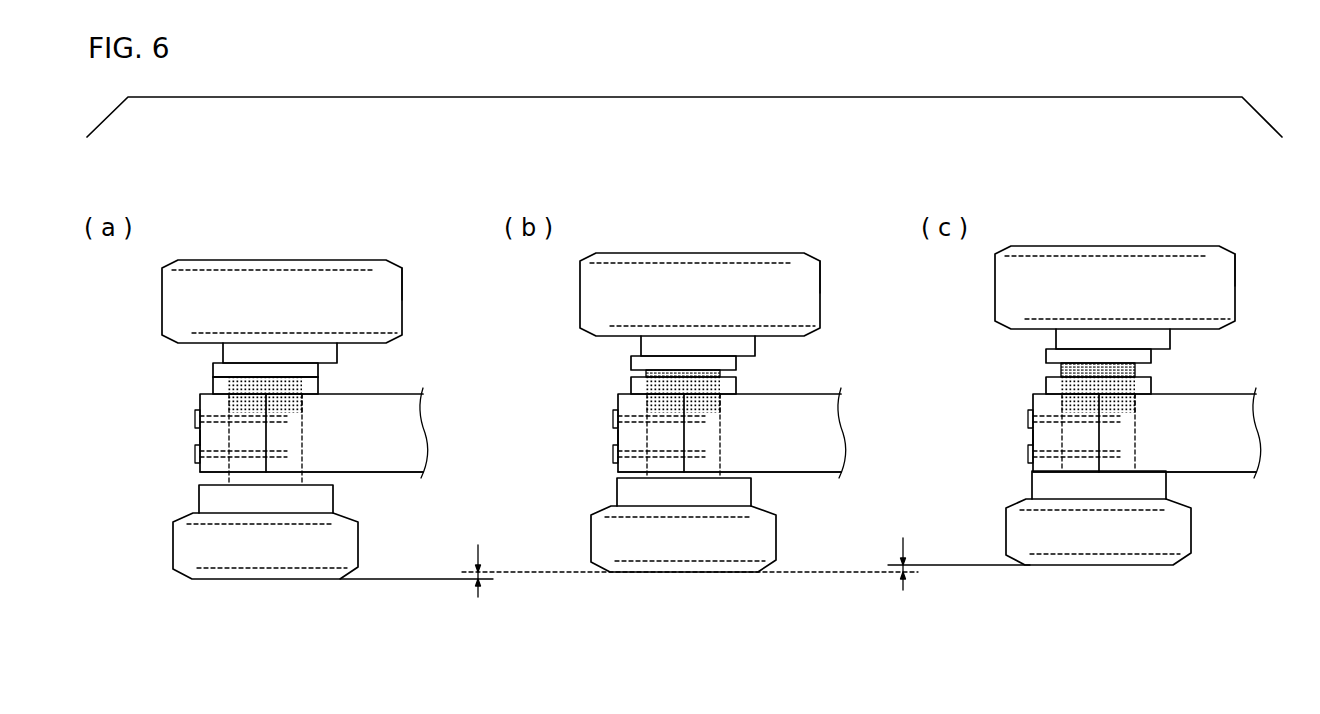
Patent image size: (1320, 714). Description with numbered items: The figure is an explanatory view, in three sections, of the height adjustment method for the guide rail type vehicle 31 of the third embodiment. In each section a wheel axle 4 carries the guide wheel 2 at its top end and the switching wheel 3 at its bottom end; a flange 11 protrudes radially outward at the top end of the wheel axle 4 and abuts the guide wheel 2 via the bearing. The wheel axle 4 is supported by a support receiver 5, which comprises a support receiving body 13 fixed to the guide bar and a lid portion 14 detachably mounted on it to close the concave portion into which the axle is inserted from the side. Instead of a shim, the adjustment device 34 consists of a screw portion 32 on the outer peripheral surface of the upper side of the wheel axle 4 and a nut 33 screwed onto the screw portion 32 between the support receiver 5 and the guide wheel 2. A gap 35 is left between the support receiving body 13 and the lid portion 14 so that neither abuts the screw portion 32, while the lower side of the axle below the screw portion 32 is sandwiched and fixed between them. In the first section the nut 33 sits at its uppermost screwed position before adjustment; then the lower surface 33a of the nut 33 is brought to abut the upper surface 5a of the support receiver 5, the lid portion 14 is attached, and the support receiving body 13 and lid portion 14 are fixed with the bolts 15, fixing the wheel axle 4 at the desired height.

The guide wheel 2 is at (218, 260).
The switching wheel 3 is at (233, 580).
The wheel axle 4 is at (303, 440).
The support receiver 5 is at (368, 389).
The upper surface of the support receiver 5a is at (317, 394).
The flange 11 is at (212, 368).
The support receiving body 13 is at (358, 473).
The lid portion 14 is at (200, 440).
The bolts 15 is at (196, 417).
The guide rail type vehicle 31 is at (318, 232).
The screw portion 32 is at (212, 377).
The nut 33 is at (212, 383).
The lower surface of the nut 33a is at (306, 396).
The adjustment device 34 is at (102, 342).
The gap 35 is at (306, 412).